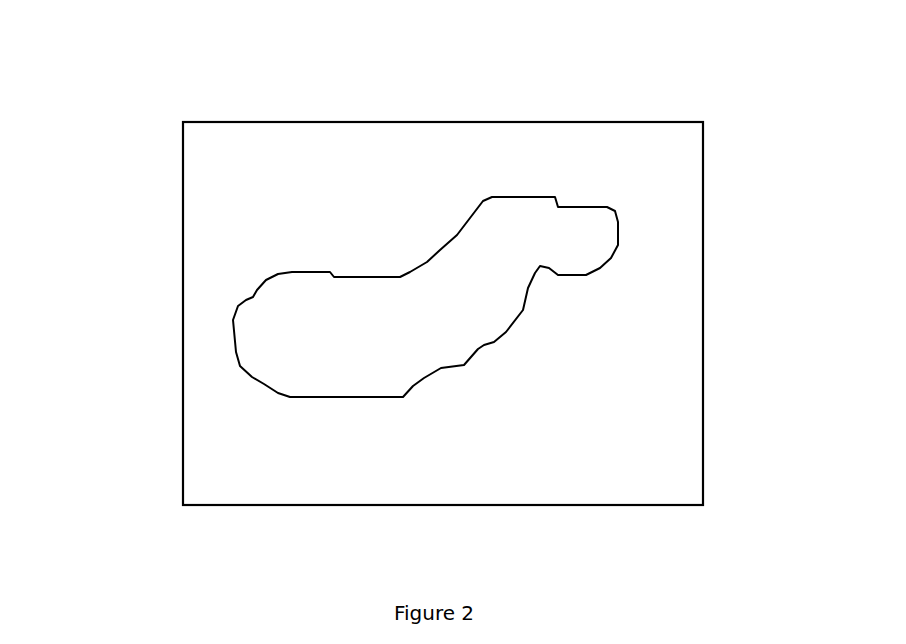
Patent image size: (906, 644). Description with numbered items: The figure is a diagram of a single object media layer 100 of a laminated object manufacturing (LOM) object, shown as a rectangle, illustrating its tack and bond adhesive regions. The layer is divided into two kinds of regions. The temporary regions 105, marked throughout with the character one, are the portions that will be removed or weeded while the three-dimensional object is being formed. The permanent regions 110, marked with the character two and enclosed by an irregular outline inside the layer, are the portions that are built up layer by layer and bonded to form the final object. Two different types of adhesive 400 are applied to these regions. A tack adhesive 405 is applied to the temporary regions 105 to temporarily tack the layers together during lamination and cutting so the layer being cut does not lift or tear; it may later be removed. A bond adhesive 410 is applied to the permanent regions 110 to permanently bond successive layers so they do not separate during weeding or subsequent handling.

The object media layer 100 is at (130, 75).
The temporary regions 105 is at (595, 145).
The permanent regions 110 is at (595, 245).
The adhesive 400 is at (350, 378).
The tack adhesive 405 is at (218, 300).
The bond adhesive 410 is at (260, 347).